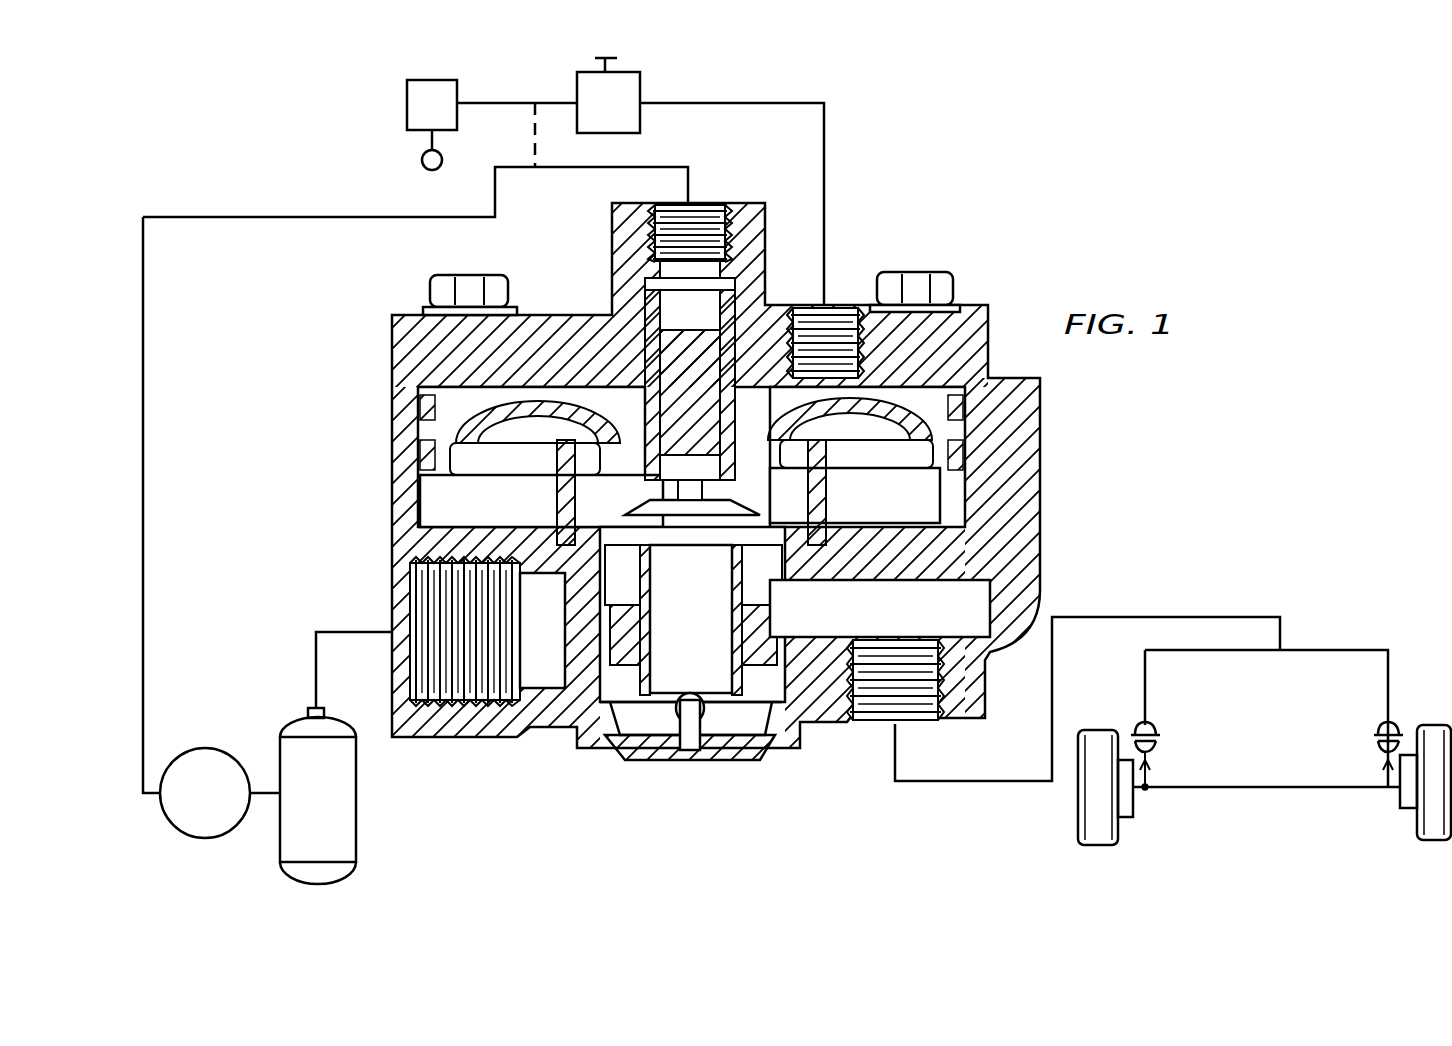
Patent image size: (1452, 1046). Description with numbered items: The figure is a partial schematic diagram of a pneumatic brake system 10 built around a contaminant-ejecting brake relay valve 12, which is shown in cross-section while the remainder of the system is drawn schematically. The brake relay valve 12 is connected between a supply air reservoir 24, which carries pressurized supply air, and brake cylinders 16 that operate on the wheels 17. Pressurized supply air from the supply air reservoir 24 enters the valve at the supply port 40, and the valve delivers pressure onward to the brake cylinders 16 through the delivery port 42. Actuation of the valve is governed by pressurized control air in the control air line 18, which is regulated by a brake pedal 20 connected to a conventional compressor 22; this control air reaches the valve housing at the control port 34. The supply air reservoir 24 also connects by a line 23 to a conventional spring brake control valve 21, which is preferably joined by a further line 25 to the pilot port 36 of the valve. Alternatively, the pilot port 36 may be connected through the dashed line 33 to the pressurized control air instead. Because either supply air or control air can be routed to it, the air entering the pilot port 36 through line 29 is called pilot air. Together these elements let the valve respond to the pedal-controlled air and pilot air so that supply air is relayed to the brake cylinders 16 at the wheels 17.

The pneumatic brake system 10 is at (897, 190).
The brake relay valve 12 is at (1048, 525).
The brake cylinders 16 is at (1155, 735).
The wheels 17 is at (1078, 805).
The control air line 18 is at (824, 180).
The brake pedal 20 is at (640, 115).
The spring brake control valve 21 is at (232, 752).
The compressor 22 is at (407, 104).
The line 23 is at (265, 798).
The supply air reservoir 24 is at (345, 795).
The line 25 is at (146, 457).
The line 29 is at (577, 167).
The dashed line 33 is at (533, 128).
The control port 34 is at (795, 322).
The pilot port 36 is at (715, 207).
The supply port 40 is at (395, 668).
The delivery port 42 is at (912, 716).